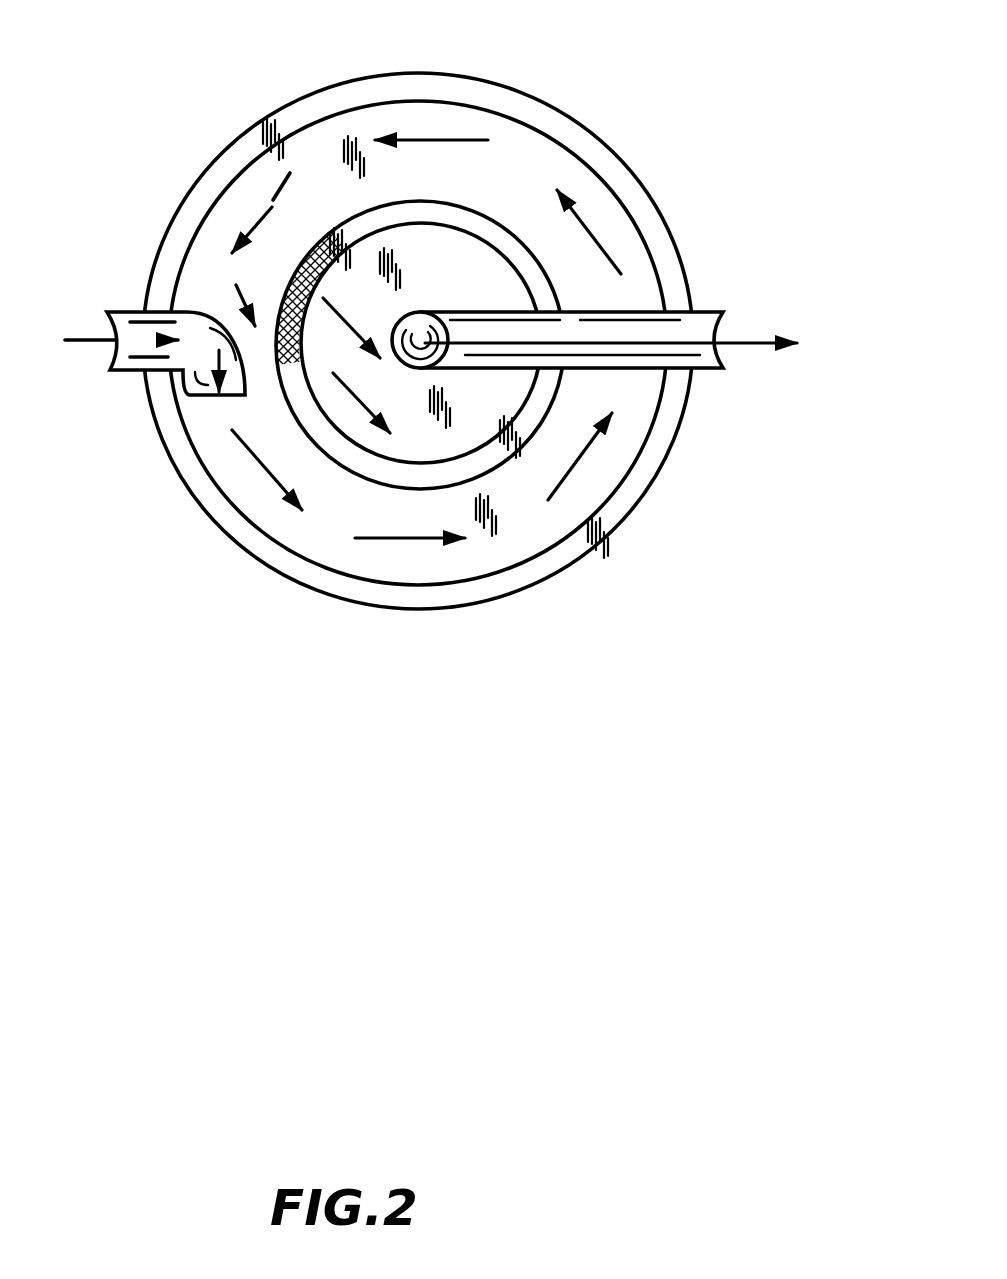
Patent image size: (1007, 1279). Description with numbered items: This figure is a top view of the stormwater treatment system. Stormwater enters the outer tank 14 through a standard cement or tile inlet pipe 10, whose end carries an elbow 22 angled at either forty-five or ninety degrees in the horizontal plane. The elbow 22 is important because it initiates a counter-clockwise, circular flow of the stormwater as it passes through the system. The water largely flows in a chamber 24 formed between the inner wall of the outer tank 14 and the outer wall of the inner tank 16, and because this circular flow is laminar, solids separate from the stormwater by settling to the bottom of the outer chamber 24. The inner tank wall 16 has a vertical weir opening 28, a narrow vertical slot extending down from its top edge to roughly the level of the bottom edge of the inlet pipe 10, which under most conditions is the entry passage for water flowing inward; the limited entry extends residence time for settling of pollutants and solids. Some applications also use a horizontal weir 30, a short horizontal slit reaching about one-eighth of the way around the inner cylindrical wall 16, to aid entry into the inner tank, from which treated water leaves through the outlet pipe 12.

The inlet pipe 10 is at (112, 358).
The outlet pipe 12 is at (723, 287).
The outer tank 14 is at (455, 90).
The inner tank wall 16 is at (497, 230).
The elbow 22 is at (202, 310).
The chamber 24 is at (323, 530).
The vertical weir opening 28 is at (247, 400).
The horizontal weir 30 is at (300, 262).